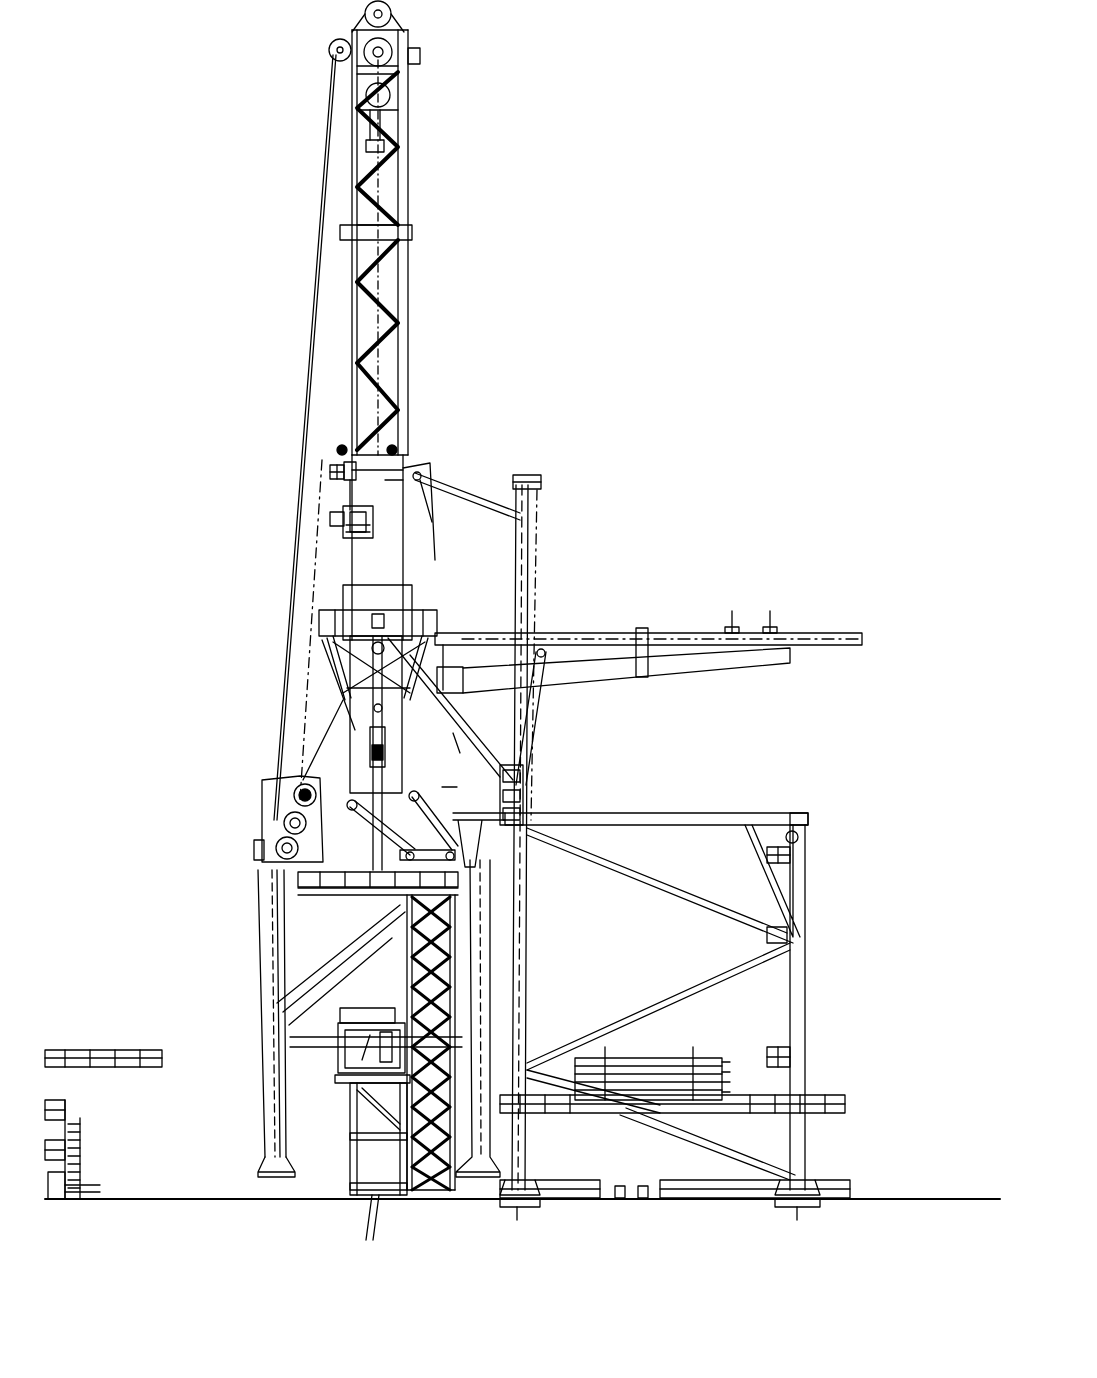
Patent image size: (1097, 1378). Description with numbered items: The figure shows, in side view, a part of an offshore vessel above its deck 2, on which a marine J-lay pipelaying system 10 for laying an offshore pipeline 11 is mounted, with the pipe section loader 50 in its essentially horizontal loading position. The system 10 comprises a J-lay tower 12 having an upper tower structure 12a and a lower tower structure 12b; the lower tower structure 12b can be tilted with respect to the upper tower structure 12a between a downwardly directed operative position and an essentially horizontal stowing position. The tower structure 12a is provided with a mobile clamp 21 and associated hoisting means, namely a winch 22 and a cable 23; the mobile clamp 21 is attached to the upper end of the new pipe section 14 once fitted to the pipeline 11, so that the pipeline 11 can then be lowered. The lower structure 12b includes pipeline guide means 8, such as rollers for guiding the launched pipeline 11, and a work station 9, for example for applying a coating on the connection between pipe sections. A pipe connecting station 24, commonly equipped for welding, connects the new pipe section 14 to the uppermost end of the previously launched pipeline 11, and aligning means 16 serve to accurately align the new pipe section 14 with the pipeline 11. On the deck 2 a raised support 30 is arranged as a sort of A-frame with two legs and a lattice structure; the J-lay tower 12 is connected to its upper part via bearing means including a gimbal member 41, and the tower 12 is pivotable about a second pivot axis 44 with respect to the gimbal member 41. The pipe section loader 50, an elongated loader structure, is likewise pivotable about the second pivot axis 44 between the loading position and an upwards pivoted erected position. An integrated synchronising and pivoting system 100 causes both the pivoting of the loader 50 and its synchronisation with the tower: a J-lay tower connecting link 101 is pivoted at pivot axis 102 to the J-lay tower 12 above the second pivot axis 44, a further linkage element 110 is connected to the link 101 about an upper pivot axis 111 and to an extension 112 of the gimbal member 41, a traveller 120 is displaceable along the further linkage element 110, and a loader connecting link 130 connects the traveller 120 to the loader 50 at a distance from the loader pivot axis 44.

The deck 2 is at (205, 1199).
The pipeline guide means 8 is at (334, 1196).
The work station 9 is at (348, 1060).
The marine J-lay pipelaying system 10 is at (198, 744).
The pipeline 11 is at (380, 1232).
The J-lay tower 12 is at (462, 262).
The upper tower structure 12a is at (402, 384).
The lower tower structure 12b is at (455, 998).
The new pipe section 14 is at (598, 636).
The pipe section aligning means 16 is at (338, 485).
The mobile clamp 21 is at (392, 146).
The winch 22 is at (270, 836).
The cable 23 is at (302, 428).
The pipe connecting station 24 is at (412, 596).
The raised support 30 is at (270, 963).
The gimbal member 41 is at (325, 620).
The second pivot axis 44 is at (345, 650).
The pipe section loader 50 is at (690, 660).
The integrated synchronising and pivoting system 100 is at (594, 446).
The J-lay tower connecting link 101 is at (465, 492).
The pivot axis 102 is at (440, 522).
The further linkage element 110 is at (530, 583).
The upper pivot axis 111 is at (542, 492).
The extension of the gimbal member 112 is at (425, 728).
The traveller 120 is at (564, 786).
The loader connecting link 130 is at (537, 712).